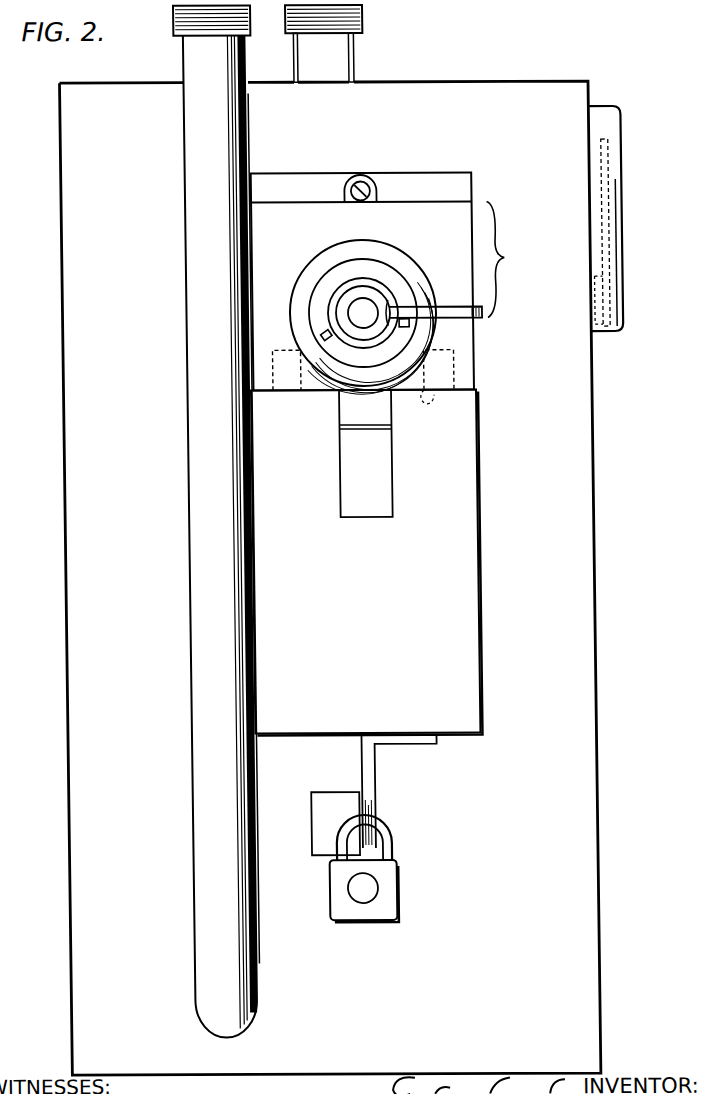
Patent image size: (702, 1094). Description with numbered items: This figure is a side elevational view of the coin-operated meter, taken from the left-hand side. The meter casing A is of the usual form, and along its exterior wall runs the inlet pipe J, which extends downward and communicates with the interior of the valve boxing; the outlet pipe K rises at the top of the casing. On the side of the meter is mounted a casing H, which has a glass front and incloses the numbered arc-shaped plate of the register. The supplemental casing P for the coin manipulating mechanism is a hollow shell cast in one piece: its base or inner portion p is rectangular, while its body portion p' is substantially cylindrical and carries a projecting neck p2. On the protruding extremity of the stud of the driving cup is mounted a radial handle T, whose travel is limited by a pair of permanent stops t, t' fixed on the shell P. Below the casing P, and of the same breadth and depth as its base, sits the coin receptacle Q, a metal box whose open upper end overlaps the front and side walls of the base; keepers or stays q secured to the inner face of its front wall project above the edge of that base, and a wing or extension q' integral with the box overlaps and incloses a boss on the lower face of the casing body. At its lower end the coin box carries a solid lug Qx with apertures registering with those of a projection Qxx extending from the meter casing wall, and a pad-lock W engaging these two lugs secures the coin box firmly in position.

The casing of the meter A is at (329, 578).
The inlet pipe J is at (205, 268).
The outlet pipe K is at (343, 60).
The casing H is at (632, 215).
The supplemental casing P is at (505, 259).
The base or inner portion p is at (362, 282).
The body portion p' is at (363, 315).
The projecting neck p2 is at (364, 277).
The radial handle T is at (453, 307).
The permanent stop t is at (320, 323).
The permanent stop t' is at (426, 331).
The keepers, braces, or stays q is at (363, 382).
The wing or extension q' is at (379, 453).
The coin receptacle Q is at (366, 563).
The solid lug Qx is at (362, 807).
The projection Qxx is at (349, 796).
The pad-lock W is at (356, 918).